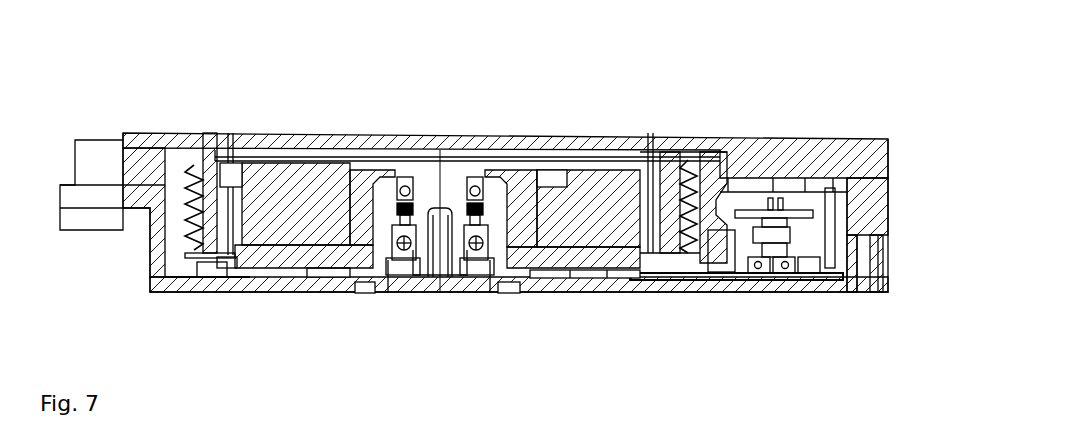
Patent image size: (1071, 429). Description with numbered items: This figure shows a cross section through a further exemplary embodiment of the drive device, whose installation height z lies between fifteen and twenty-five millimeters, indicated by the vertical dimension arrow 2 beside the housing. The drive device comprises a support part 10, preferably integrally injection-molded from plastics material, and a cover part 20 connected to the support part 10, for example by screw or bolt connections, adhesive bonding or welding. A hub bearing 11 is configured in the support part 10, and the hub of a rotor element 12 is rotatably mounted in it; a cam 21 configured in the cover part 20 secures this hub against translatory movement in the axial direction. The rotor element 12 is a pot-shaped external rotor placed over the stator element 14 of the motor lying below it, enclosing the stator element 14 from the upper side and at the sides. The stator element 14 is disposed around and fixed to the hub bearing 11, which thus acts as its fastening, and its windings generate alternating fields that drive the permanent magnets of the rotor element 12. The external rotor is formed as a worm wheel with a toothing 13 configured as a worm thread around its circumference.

The support part 10 is at (474, 235).
The cover part 20 is at (505, 110).
The rotor element 12 is at (467, 101).
The stator element 14 is at (459, 159).
The hub bearing 11 is at (437, 155).
The cam 21 is at (440, 168).
The toothing 13 is at (470, 150).
The direction arrow 2 is at (910, 143).